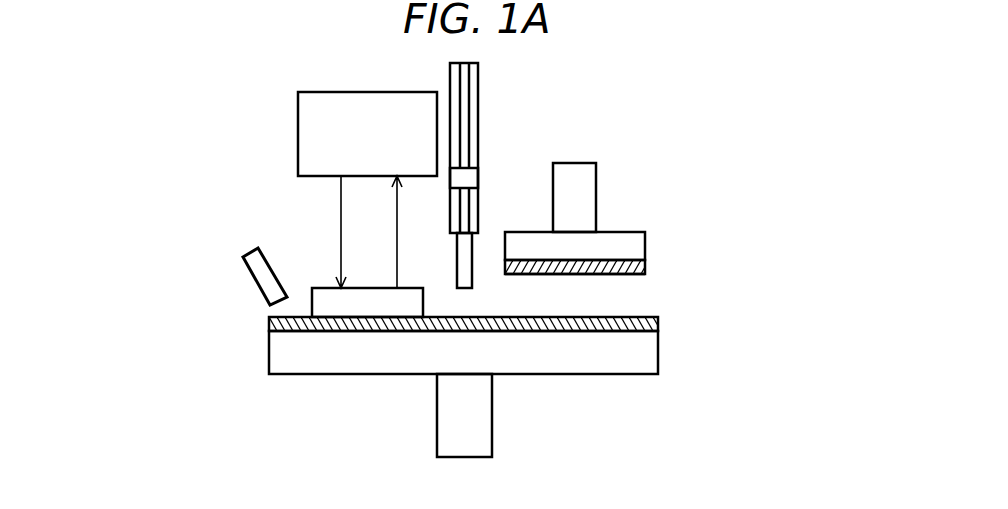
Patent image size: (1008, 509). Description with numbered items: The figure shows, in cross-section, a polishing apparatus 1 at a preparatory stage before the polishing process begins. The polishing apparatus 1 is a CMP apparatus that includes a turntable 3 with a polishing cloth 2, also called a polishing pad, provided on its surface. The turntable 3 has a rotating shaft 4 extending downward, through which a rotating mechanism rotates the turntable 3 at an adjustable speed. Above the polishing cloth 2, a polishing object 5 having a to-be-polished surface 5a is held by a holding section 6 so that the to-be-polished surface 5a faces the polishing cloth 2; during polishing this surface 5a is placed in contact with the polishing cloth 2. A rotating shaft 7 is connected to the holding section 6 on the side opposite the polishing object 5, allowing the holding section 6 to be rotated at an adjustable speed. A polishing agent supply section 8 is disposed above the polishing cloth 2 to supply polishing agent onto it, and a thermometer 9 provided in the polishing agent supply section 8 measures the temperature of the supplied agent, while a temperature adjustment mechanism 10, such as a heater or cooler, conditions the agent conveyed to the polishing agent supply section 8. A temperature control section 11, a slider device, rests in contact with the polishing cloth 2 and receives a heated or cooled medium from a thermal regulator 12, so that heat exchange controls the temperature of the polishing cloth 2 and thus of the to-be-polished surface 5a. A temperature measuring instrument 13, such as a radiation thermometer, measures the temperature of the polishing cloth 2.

The polishing apparatus 1 is at (631, 118).
The polishing cloth 2 is at (660, 325).
The turntable 3 is at (660, 357).
The rotating shaft 4 is at (493, 428).
The polishing object 5 is at (647, 268).
The to-be-polished surface 5a is at (578, 274).
The holding section 6 is at (647, 245).
The rotating shaft 7 is at (598, 203).
The polishing agent supply section 8 is at (456, 263).
The thermometer 9 is at (478, 178).
The temperature adjustment mechanism 10 is at (480, 115).
The temperature control section 11 is at (323, 287).
The thermal regulator 12 is at (298, 129).
The temperature measuring instrument 13 is at (250, 275).